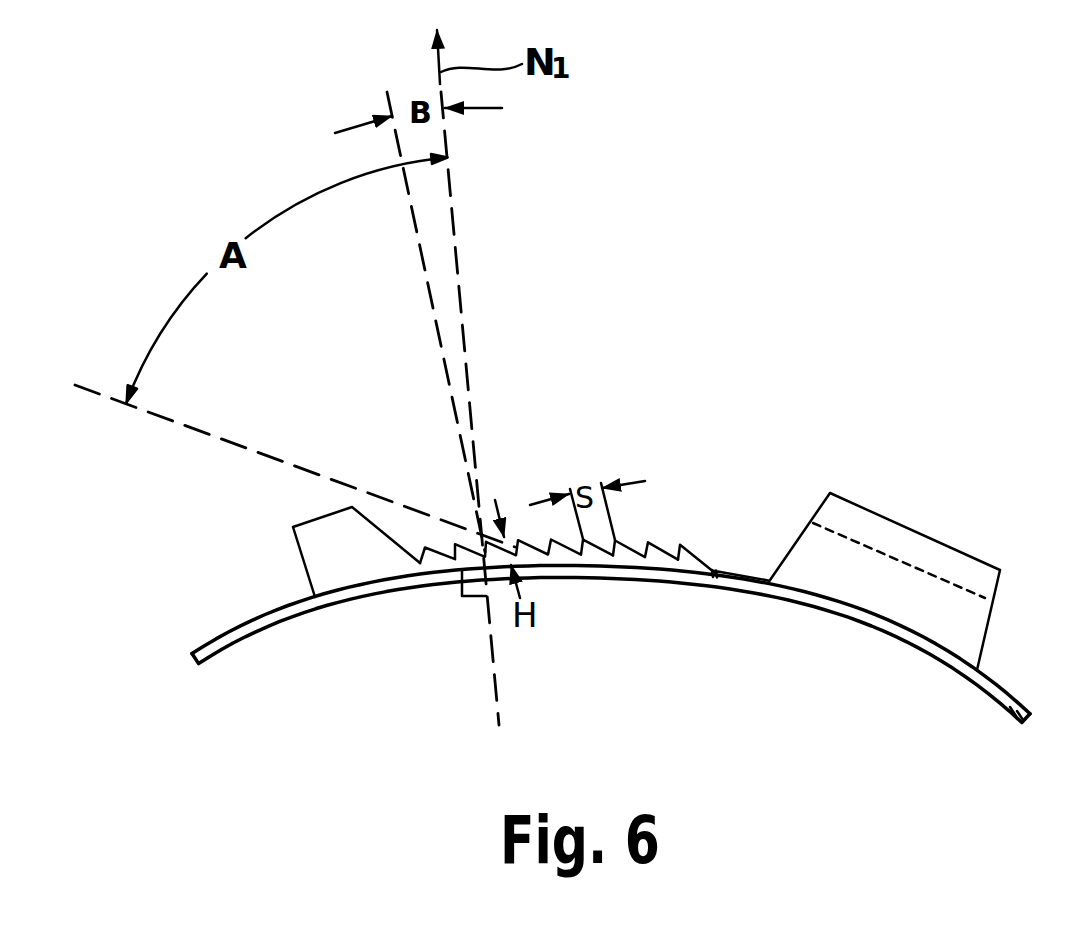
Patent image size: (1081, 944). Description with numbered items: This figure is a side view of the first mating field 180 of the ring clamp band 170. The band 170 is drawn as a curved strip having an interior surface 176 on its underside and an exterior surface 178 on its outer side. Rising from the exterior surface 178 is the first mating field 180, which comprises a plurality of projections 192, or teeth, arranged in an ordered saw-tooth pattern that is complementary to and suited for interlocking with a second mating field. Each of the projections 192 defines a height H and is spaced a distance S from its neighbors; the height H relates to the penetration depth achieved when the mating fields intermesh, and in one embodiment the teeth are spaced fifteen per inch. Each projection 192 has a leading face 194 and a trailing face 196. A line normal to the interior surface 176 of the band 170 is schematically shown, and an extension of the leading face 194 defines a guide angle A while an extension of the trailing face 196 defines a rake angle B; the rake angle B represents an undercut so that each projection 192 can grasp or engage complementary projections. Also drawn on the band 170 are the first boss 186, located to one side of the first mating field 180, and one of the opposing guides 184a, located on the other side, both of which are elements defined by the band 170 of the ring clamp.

The band 170 is at (553, 633).
The interior surface 176 is at (222, 658).
The exterior surface 178 is at (240, 623).
The first mating field 180 is at (598, 424).
The first boss 186 is at (335, 533).
The projections 192 is at (650, 542).
The leading face 194 is at (698, 557).
The trailing face 196 is at (678, 545).
The guide 184a is at (965, 552).